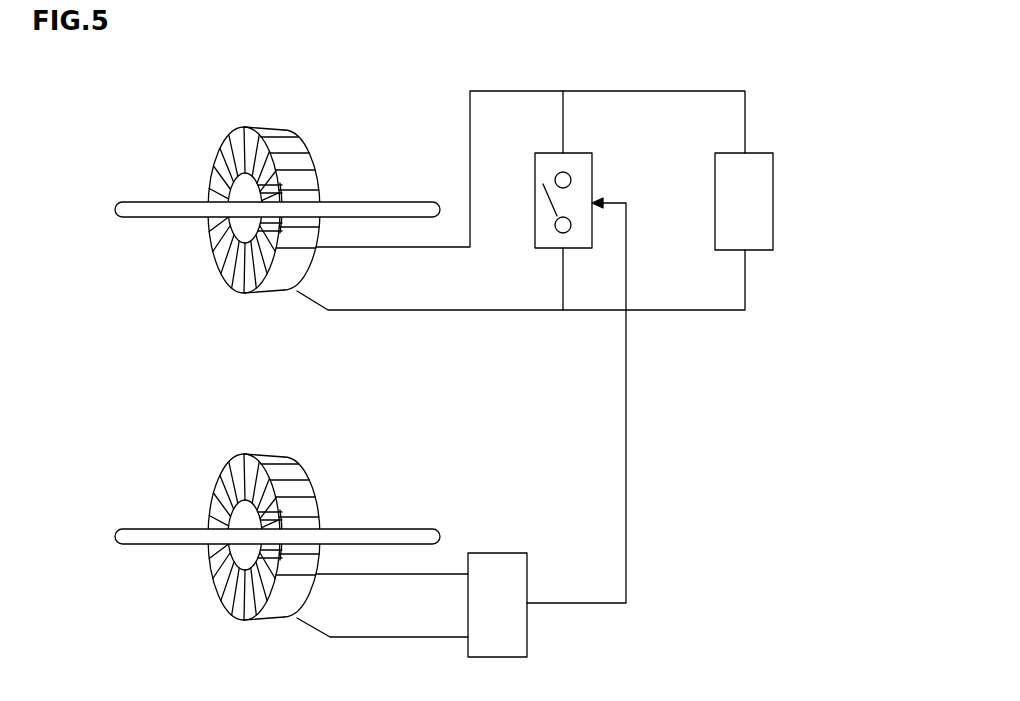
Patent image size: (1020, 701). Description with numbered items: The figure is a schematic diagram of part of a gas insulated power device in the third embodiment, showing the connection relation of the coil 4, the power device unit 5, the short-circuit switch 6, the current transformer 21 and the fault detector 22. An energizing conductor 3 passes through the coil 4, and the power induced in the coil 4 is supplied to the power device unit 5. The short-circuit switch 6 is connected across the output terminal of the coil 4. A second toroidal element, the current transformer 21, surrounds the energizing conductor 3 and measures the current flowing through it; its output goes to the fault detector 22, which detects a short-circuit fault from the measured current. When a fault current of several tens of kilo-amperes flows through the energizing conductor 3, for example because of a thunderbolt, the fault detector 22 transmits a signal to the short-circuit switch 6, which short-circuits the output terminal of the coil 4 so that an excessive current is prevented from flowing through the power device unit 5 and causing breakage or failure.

The energizing conductor 3 is at (168, 201).
The coil 4 is at (268, 124).
The power device unit 5 is at (775, 173).
The short-circuit switch 6 is at (583, 175).
The current transformer 21 is at (268, 450).
The fault detector 22 is at (505, 556).